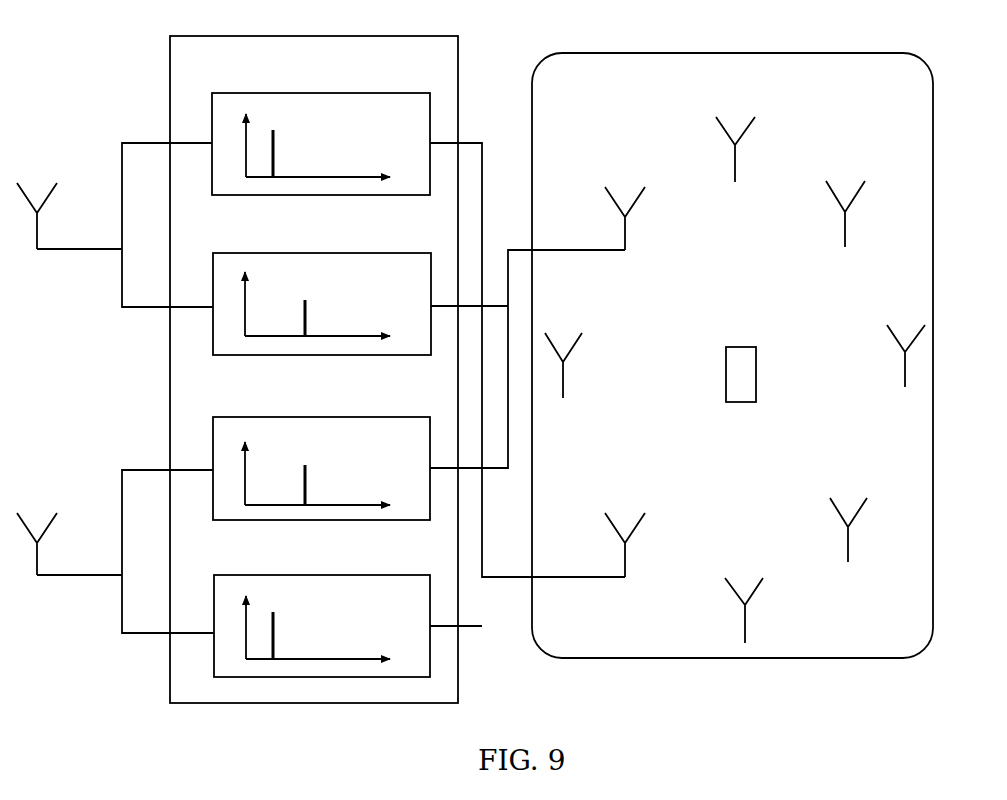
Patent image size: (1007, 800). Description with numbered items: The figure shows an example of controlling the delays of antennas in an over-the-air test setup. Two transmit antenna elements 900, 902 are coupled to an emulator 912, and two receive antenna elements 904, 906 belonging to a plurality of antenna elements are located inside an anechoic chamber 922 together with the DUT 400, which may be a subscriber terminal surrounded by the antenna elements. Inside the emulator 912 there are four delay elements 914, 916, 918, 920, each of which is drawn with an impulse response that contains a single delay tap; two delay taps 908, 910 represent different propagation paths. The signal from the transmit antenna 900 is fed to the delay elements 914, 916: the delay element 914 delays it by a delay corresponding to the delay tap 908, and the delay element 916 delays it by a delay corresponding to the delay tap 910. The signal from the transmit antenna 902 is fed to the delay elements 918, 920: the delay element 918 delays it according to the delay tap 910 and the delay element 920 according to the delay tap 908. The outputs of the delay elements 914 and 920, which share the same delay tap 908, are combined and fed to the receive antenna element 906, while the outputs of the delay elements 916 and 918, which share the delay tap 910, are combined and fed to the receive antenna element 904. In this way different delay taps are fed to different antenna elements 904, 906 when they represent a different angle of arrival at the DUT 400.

The DUT 400 is at (738, 347).
The transmit antenna element 900 is at (24, 194).
The transmit antenna element 902 is at (24, 524).
The receive antenna element 904 is at (612, 198).
The receive antenna element 906 is at (612, 524).
The delay tap 908 is at (273, 131).
The delay tap 910 is at (305, 301).
The emulator 912 is at (427, 36).
The delay element 914 is at (345, 93).
The delay element 916 is at (360, 253).
The delay element 918 is at (360, 417).
The delay element 920 is at (357, 575).
The anechoic chamber 922 is at (775, 53).